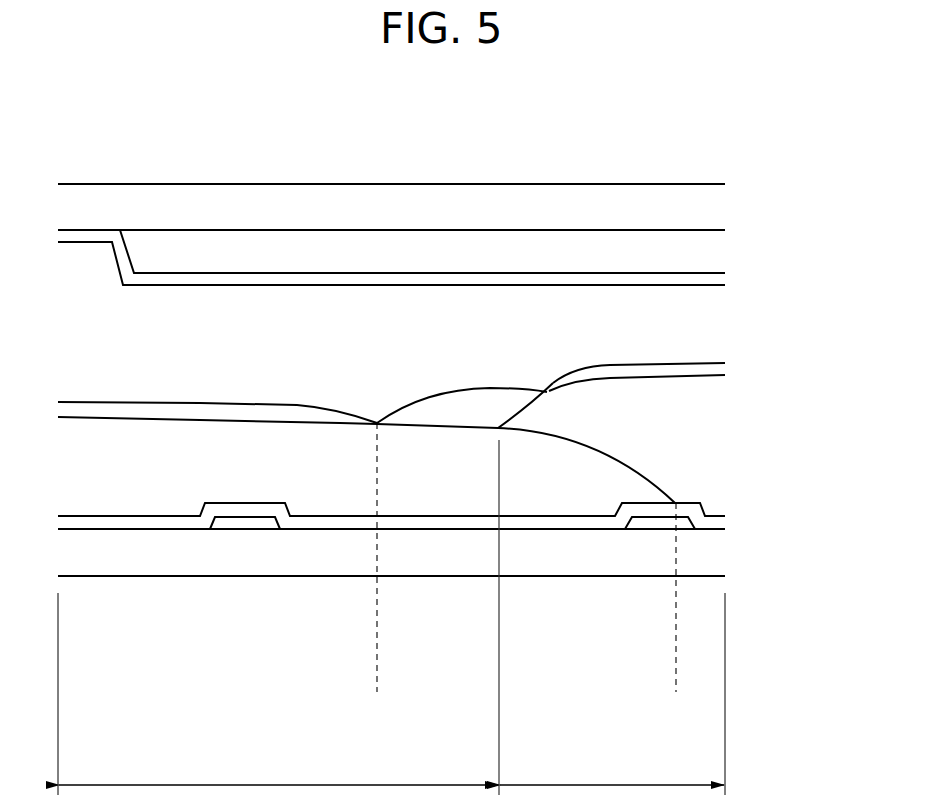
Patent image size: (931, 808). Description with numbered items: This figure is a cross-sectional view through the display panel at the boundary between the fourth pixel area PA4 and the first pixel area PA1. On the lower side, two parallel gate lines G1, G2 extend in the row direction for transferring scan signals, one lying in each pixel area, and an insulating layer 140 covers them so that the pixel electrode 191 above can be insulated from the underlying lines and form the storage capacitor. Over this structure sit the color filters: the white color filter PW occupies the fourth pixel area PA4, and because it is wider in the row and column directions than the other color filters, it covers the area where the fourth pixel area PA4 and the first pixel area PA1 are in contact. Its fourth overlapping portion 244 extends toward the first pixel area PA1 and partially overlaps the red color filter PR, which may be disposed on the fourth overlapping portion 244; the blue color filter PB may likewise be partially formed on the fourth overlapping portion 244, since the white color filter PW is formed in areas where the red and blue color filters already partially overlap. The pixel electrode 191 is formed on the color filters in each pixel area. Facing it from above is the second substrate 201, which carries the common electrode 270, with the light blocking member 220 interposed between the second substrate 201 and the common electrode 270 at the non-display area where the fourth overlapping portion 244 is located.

The second substrate 201 is at (713, 209).
The light blocking member 220 is at (713, 250).
The common electrode 270 is at (715, 278).
The pixel electrode 191 is at (178, 412).
The insulating layer 140 is at (722, 522).
The fourth overlapping portion 244 is at (675, 687).
The gate line G1 is at (243, 523).
The gate line G2 is at (648, 524).
The fourth pixel area PA4 is at (278, 767).
The first pixel area PA1 is at (612, 767).
The blue color filter PB is at (482, 408).
The white color filter PW is at (317, 462).
The red color filter PR is at (678, 417).